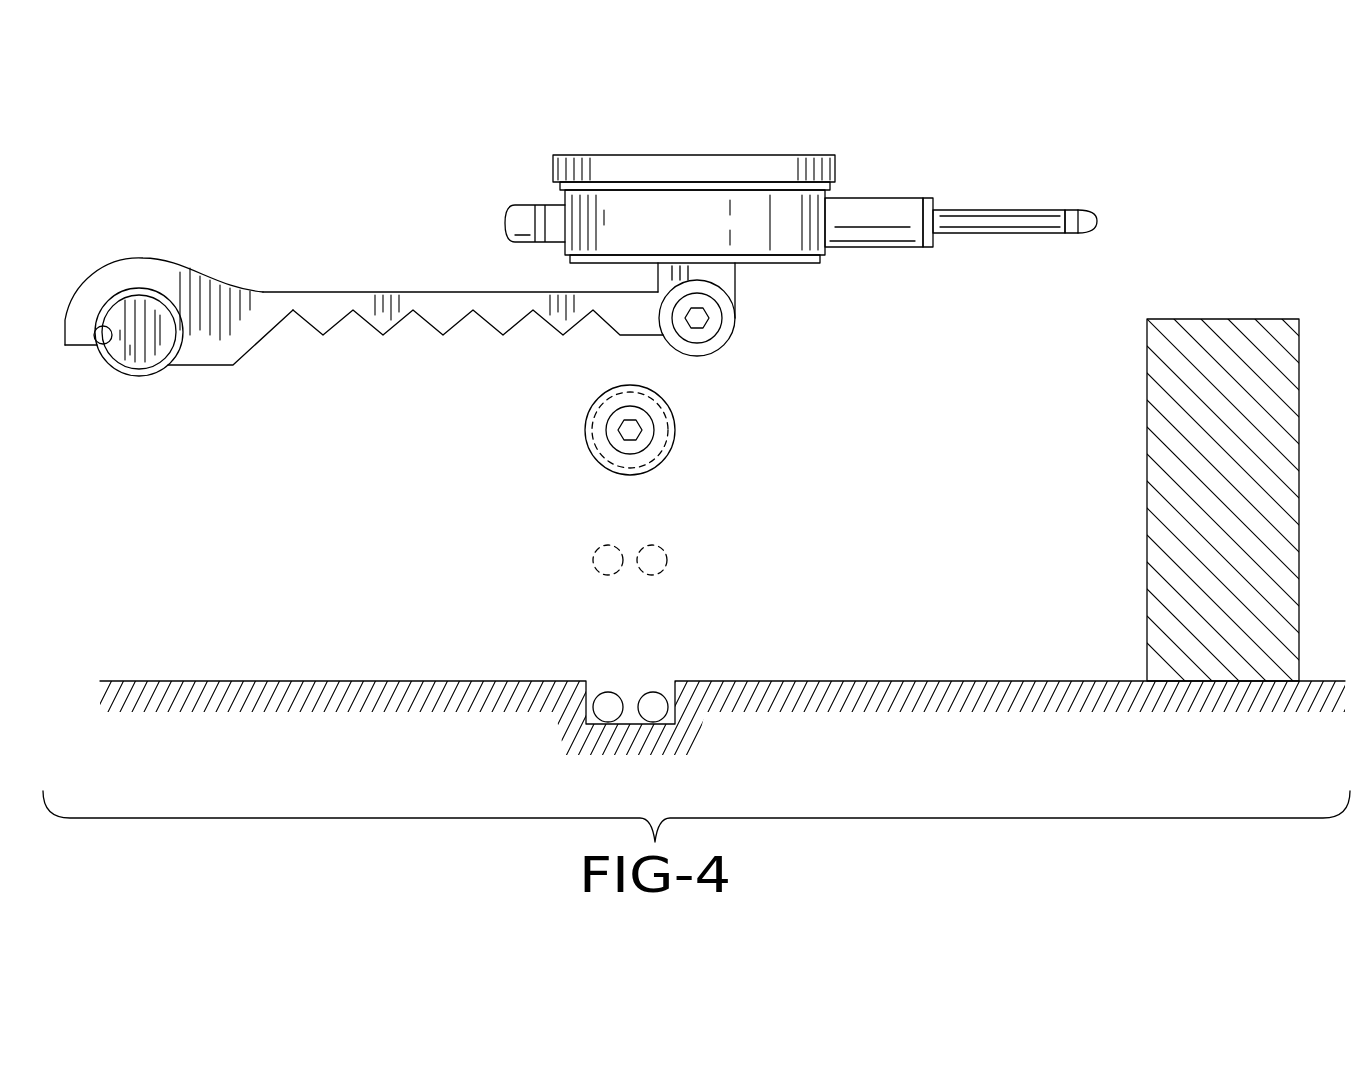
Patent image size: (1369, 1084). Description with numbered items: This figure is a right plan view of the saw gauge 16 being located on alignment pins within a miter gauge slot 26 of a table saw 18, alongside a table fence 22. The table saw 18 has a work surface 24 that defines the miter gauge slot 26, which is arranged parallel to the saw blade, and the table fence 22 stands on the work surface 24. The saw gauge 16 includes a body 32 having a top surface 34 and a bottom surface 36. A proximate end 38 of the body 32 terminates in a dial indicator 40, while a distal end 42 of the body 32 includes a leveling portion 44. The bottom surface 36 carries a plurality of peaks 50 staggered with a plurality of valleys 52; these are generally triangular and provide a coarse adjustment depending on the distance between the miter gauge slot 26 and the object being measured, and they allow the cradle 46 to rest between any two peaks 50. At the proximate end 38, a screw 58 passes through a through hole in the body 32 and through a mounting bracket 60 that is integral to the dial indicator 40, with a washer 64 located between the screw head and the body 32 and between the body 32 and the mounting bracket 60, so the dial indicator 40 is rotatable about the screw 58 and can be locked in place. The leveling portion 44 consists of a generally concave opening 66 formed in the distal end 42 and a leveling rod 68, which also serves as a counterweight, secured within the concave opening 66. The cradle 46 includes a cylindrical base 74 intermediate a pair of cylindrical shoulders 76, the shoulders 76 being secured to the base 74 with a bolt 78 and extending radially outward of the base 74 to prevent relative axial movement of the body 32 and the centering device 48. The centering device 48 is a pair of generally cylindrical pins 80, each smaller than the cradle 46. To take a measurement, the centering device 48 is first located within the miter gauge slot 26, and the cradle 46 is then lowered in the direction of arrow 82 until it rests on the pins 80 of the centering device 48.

The saw gauge 16 is at (284, 207).
The table saw 18 is at (228, 681).
The table fence 22 is at (1155, 527).
The work surface 24 is at (850, 681).
The miter gauge slot 26 is at (594, 690).
The body 32 is at (437, 292).
The top surface 34 is at (375, 292).
The bottom surface 36 is at (210, 365).
The proximate end 38 is at (736, 318).
The dial indicator 40 is at (775, 155).
The distal end 42 is at (65, 328).
The leveling portion 44 is at (128, 378).
The cradle 46 is at (680, 414).
The centering device 48 is at (682, 573).
The peaks 50 is at (563, 337).
The valleys 52 is at (595, 312).
The screw 58 is at (700, 338).
The mounting bracket 60 is at (736, 280).
The washer 64 is at (730, 332).
The concave opening 66 is at (103, 350).
The leveling rod 68 is at (135, 318).
The base 74 is at (648, 462).
The shoulders 76 is at (598, 460).
The bolt 78 is at (645, 438).
The pins 80 is at (600, 552).
The arrow 82 is at (630, 657).